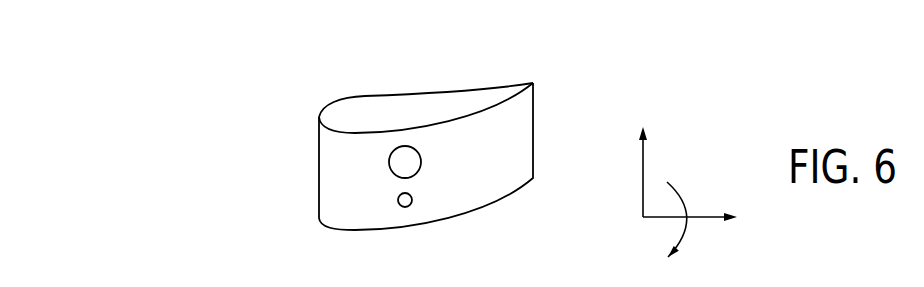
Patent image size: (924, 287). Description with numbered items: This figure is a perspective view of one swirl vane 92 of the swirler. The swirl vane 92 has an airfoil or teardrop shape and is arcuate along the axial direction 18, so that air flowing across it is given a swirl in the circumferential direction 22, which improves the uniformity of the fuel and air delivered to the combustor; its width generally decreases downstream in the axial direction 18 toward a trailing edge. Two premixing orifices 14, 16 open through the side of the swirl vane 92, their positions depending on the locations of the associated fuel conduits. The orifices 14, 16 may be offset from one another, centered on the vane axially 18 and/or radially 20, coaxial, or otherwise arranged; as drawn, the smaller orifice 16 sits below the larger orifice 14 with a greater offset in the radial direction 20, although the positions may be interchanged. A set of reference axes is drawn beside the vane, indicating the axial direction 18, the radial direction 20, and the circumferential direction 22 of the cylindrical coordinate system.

The swirl vane 92 is at (578, 66).
The premixing orifice 14 is at (421, 164).
The premixing orifice 16 is at (412, 197).
The radial direction 20 is at (642, 163).
The axial direction 18 is at (697, 221).
The circumferential direction 22 is at (685, 193).